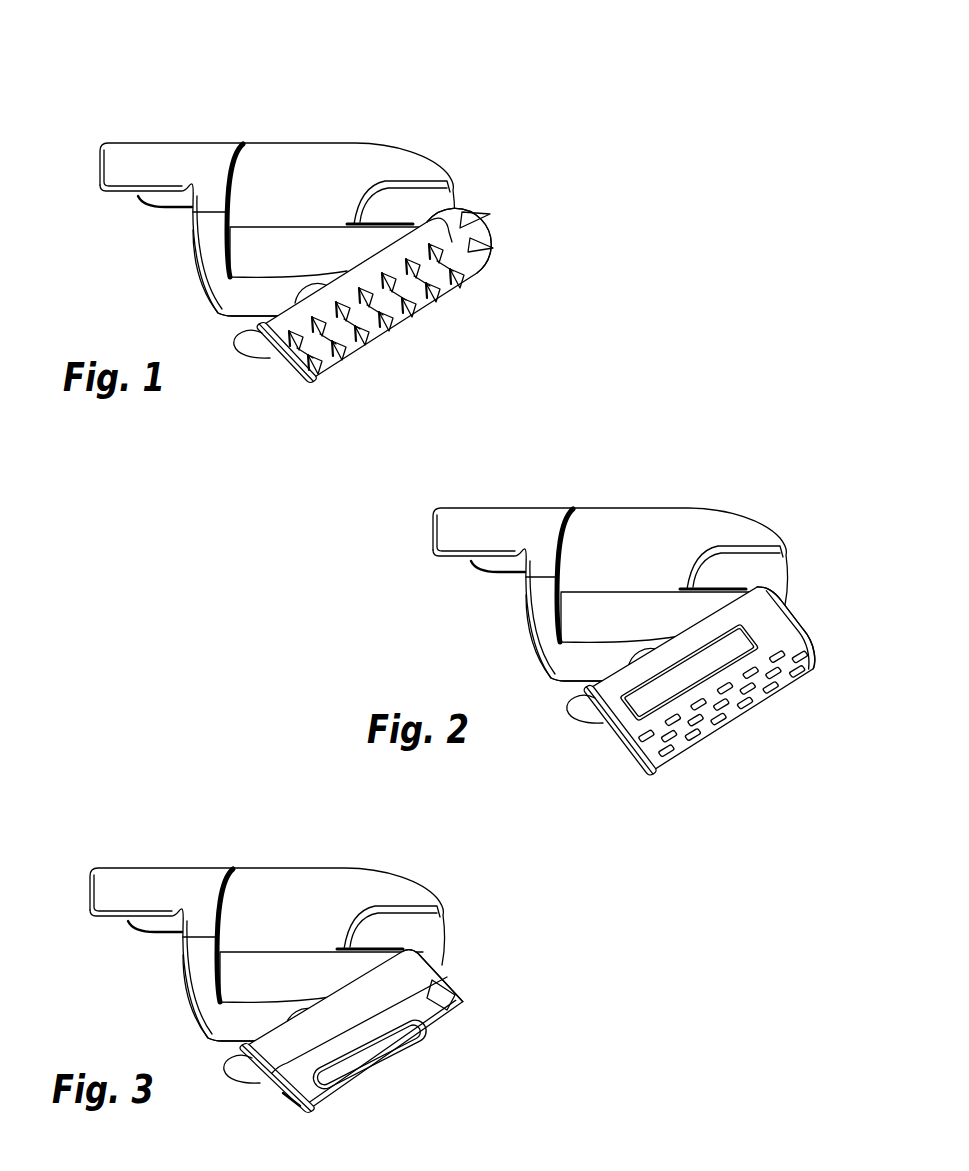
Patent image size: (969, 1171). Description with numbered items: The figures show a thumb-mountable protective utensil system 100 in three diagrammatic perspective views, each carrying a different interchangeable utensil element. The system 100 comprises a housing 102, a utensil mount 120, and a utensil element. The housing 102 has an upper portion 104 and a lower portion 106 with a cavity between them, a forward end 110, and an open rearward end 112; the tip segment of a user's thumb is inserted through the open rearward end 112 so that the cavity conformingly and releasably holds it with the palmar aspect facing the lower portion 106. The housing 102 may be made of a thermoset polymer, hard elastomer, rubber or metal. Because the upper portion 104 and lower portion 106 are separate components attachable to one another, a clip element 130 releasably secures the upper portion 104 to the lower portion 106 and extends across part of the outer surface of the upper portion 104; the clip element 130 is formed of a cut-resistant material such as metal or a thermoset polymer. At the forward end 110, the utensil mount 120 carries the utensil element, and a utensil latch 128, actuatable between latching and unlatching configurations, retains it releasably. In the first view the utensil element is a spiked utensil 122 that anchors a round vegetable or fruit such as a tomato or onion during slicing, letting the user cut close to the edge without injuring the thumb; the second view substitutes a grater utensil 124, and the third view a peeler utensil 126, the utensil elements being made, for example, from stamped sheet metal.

In FIG. 1, the thumb-mountable protective utensil system 100 is at (348, 89).
In FIG. 2, the thumb-mountable protective utensil system 100 is at (706, 445).
In FIG. 3, the thumb-mountable protective utensil system 100 is at (180, 800).
In FIG. 1, the housing 102 is at (207, 257).
In FIG. 2, the housing 102 is at (529, 598).
In FIG. 3, the housing 102 is at (186, 958).
In FIG. 1, the upper portion 104 is at (224, 146).
In FIG. 2, the upper portion 104 is at (610, 540).
In FIG. 3, the upper portion 104 is at (267, 900).
In FIG. 1, the lower portion 106 is at (223, 300).
In FIG. 2, the lower portion 106 is at (567, 653).
In FIG. 3, the lower portion 106 is at (225, 1009).
In FIG. 1, the forward end 110 is at (472, 187).
In FIG. 2, the forward end 110 is at (799, 563).
In FIG. 3, the forward end 110 is at (462, 930).
In FIG. 1, the open rearward end 112 is at (127, 258).
In FIG. 2, the open rearward end 112 is at (453, 619).
In FIG. 3, the open rearward end 112 is at (115, 977).
In FIG. 1, the utensil mount 120 is at (306, 383).
In FIG. 3, the utensil mount 120 is at (285, 1092).
In FIG. 1, the spiked utensil 122 is at (444, 324).
In FIG. 2, the grater utensil 124 is at (779, 723).
In FIG. 3, the peeler utensil 126 is at (405, 1068).
In FIG. 1, the utensil latch 128 is at (260, 353).
In FIG. 2, the utensil latch 128 is at (587, 716).
In FIG. 3, the utensil latch 128 is at (237, 1069).
In FIG. 1, the clip element 130 is at (367, 154).
In FIG. 2, the clip element 130 is at (735, 523).
In FIG. 3, the clip element 130 is at (392, 883).